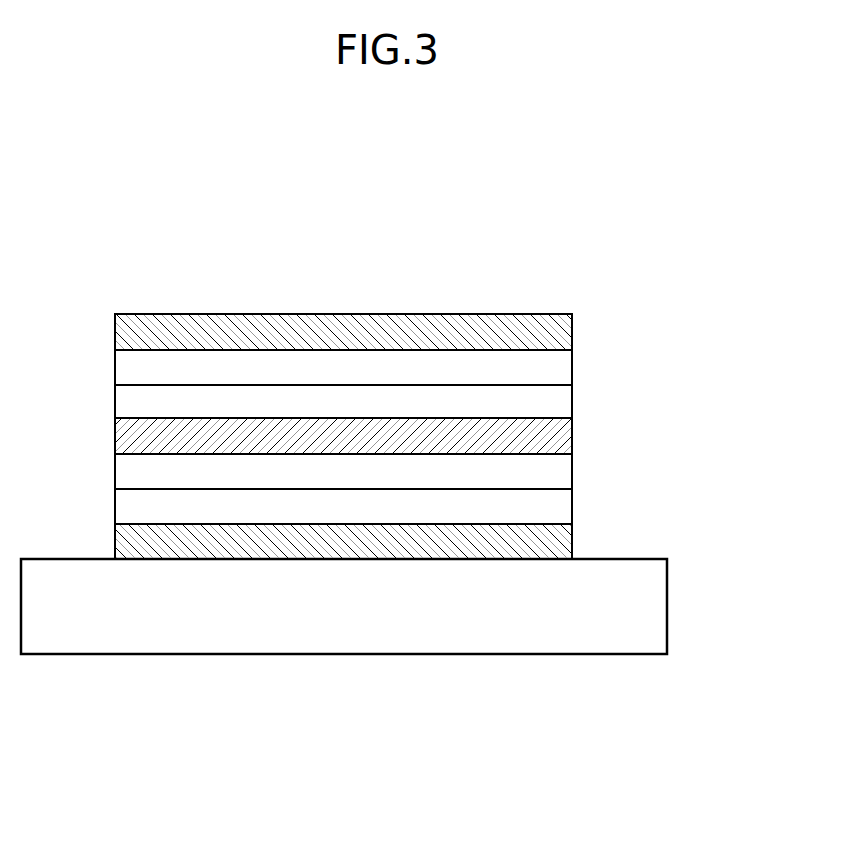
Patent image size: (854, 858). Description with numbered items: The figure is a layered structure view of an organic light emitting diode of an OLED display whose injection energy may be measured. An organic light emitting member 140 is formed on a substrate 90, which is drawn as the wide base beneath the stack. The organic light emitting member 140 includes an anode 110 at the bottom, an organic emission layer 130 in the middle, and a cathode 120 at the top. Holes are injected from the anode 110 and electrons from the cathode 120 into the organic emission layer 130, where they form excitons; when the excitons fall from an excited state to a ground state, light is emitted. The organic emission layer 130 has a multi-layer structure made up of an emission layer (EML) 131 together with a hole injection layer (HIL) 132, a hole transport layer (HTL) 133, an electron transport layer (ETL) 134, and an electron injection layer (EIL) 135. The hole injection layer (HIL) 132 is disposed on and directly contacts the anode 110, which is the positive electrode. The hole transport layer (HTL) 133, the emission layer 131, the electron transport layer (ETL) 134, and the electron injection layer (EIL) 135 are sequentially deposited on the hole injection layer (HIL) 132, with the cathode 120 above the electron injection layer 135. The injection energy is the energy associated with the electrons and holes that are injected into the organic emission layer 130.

The substrate 90 is at (343, 636).
The anode 110 is at (381, 541).
The cathode 120 is at (575, 332).
The organic emission layer 130 is at (407, 437).
The emission layer (EML) 131 is at (575, 437).
The hole injection layer (HIL) 132 is at (381, 506).
The hole transport layer (HTL) 133 is at (575, 471).
The electron transport layer (ETL) 134 is at (575, 402).
The electron injection layer (EIL) 135 is at (575, 367).
The organic light emitting member 140 is at (435, 436).